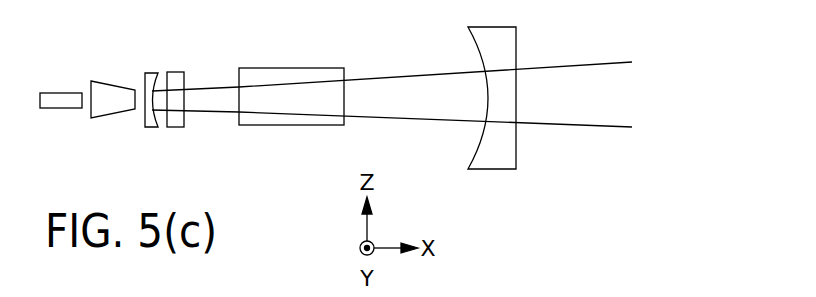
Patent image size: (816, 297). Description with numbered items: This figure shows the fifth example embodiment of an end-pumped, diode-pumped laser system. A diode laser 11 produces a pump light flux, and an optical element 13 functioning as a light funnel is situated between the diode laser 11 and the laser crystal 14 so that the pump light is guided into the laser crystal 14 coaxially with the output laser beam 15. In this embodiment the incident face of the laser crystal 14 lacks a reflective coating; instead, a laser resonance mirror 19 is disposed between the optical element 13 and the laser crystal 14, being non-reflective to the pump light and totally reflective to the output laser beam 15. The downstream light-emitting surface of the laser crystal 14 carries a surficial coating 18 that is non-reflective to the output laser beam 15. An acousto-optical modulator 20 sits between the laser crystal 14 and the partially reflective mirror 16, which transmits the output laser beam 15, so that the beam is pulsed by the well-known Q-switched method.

The diode laser 11 is at (60, 92).
The optical element 13 is at (112, 83).
The laser crystal 14 is at (175, 72).
The output laser beam 15 is at (408, 88).
The partially reflective mirror 16 is at (492, 169).
The surficial coating 18 is at (184, 117).
The laser resonance mirror 19 is at (148, 127).
The acousto-optical modulator 20 is at (290, 125).